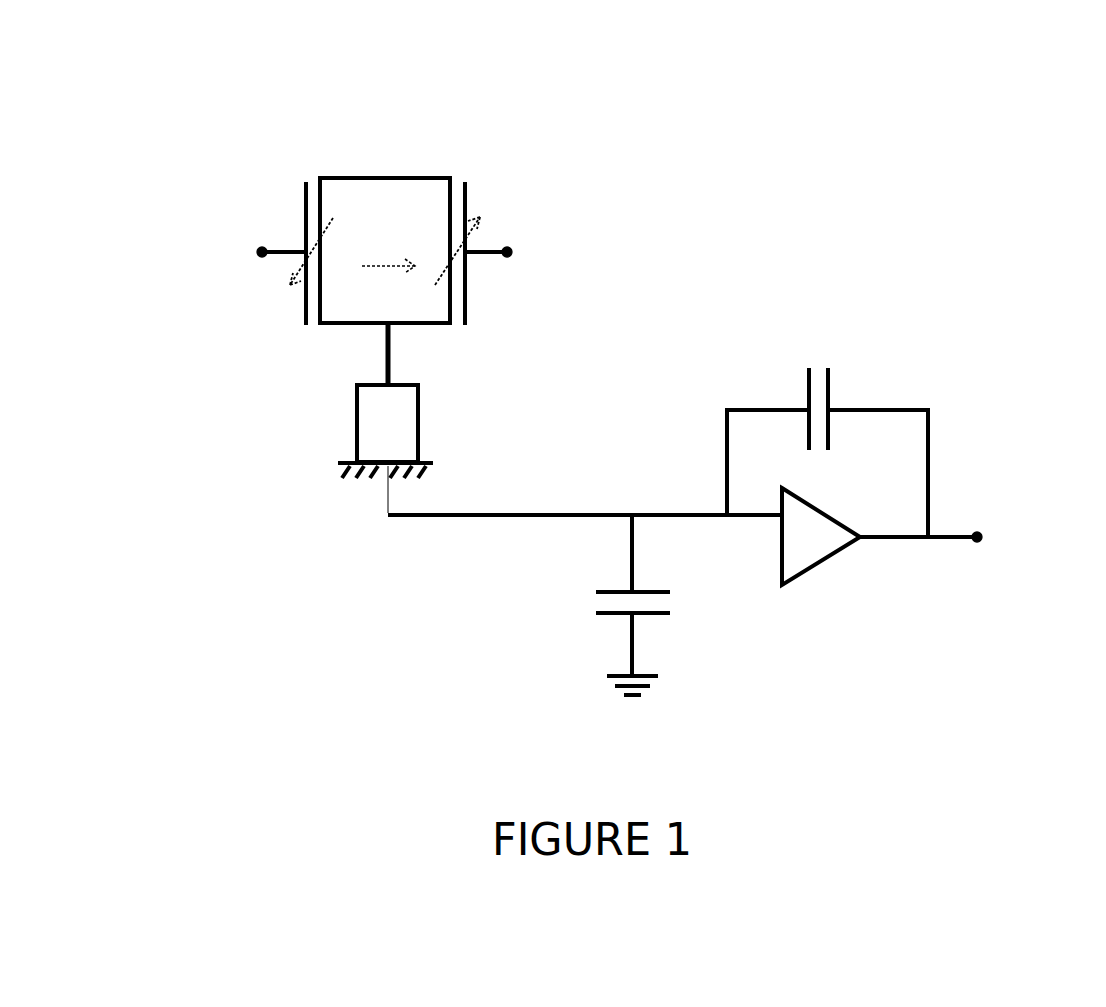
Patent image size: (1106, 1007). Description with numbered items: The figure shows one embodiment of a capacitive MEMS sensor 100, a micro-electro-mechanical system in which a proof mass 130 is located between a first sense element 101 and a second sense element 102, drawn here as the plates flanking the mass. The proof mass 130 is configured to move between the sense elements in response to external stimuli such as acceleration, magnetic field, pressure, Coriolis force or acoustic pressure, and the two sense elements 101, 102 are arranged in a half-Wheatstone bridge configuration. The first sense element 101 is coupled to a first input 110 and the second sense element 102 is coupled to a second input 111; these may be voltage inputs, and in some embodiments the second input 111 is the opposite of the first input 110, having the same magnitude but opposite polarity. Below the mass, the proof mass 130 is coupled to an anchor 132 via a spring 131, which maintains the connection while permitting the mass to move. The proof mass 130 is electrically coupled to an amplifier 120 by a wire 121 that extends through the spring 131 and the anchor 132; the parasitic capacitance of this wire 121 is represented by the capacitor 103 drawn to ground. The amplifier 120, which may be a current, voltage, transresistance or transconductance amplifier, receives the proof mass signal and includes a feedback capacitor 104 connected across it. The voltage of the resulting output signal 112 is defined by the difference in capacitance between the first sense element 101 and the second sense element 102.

The capacitive MEMS sensor 100 is at (158, 122).
The first sense element 101 is at (465, 185).
The second sense element 102 is at (306, 183).
The capacitor 103 is at (672, 613).
The feedback capacitor 104 is at (809, 368).
The first input 110 is at (507, 250).
The second input 111 is at (262, 250).
The output signal 112 is at (985, 537).
The amplifier 120 is at (840, 556).
The wire 121 is at (388, 513).
The proof mass 130 is at (387, 197).
The spring 131 is at (388, 358).
The anchor 132 is at (357, 408).